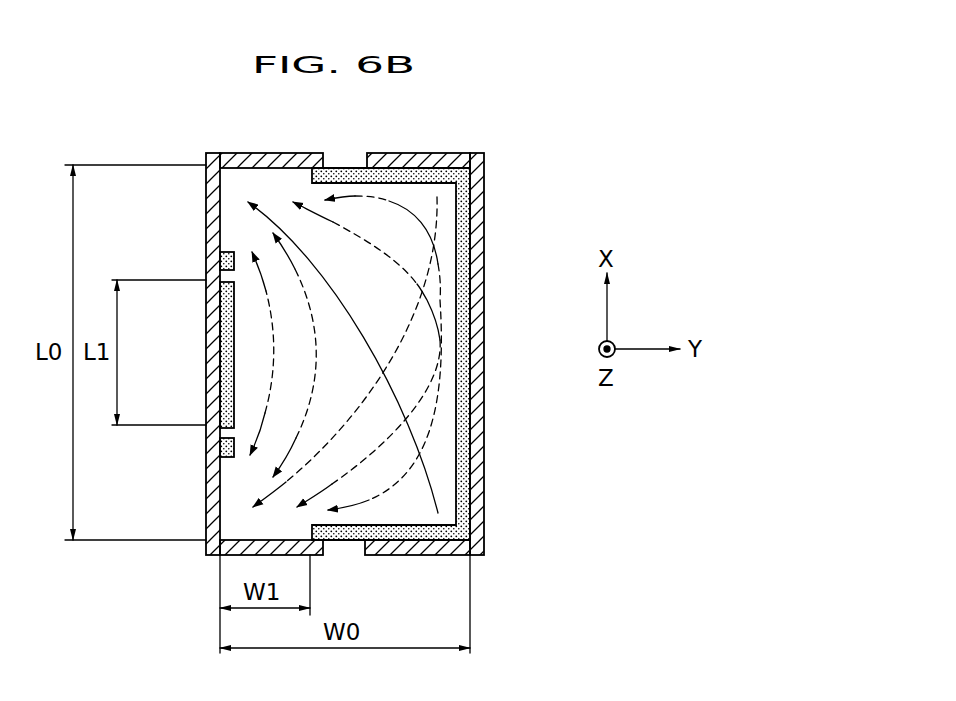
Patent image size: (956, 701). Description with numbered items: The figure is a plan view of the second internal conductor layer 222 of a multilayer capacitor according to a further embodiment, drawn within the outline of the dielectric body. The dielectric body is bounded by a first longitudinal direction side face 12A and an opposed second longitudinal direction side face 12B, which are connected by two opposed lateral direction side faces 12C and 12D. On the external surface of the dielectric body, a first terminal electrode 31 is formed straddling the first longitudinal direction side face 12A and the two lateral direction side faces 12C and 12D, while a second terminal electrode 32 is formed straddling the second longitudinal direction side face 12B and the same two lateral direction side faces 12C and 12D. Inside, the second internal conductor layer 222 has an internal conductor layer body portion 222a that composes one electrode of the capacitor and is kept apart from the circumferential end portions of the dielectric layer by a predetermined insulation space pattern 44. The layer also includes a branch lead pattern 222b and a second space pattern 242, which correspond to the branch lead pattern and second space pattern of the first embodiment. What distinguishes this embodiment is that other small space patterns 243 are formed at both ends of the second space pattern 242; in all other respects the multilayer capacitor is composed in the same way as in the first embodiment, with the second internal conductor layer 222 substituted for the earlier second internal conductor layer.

The first longitudinal direction side face 12A is at (518, 354).
The second longitudinal direction side face 12B is at (171, 354).
The lateral direction side face 12C is at (343, 548).
The lateral direction side face 12D is at (348, 165).
The first terminal electrode 31 is at (480, 308).
The second terminal electrode 32 is at (215, 235).
The insulation space pattern 44 is at (437, 168).
The second space pattern 242 is at (226, 322).
The small space patterns 243 is at (226, 259).
The second internal conductor layer 222 is at (352, 317).
The internal conductor layer body portion 222a is at (420, 362).
The branch lead pattern 222b is at (247, 185).